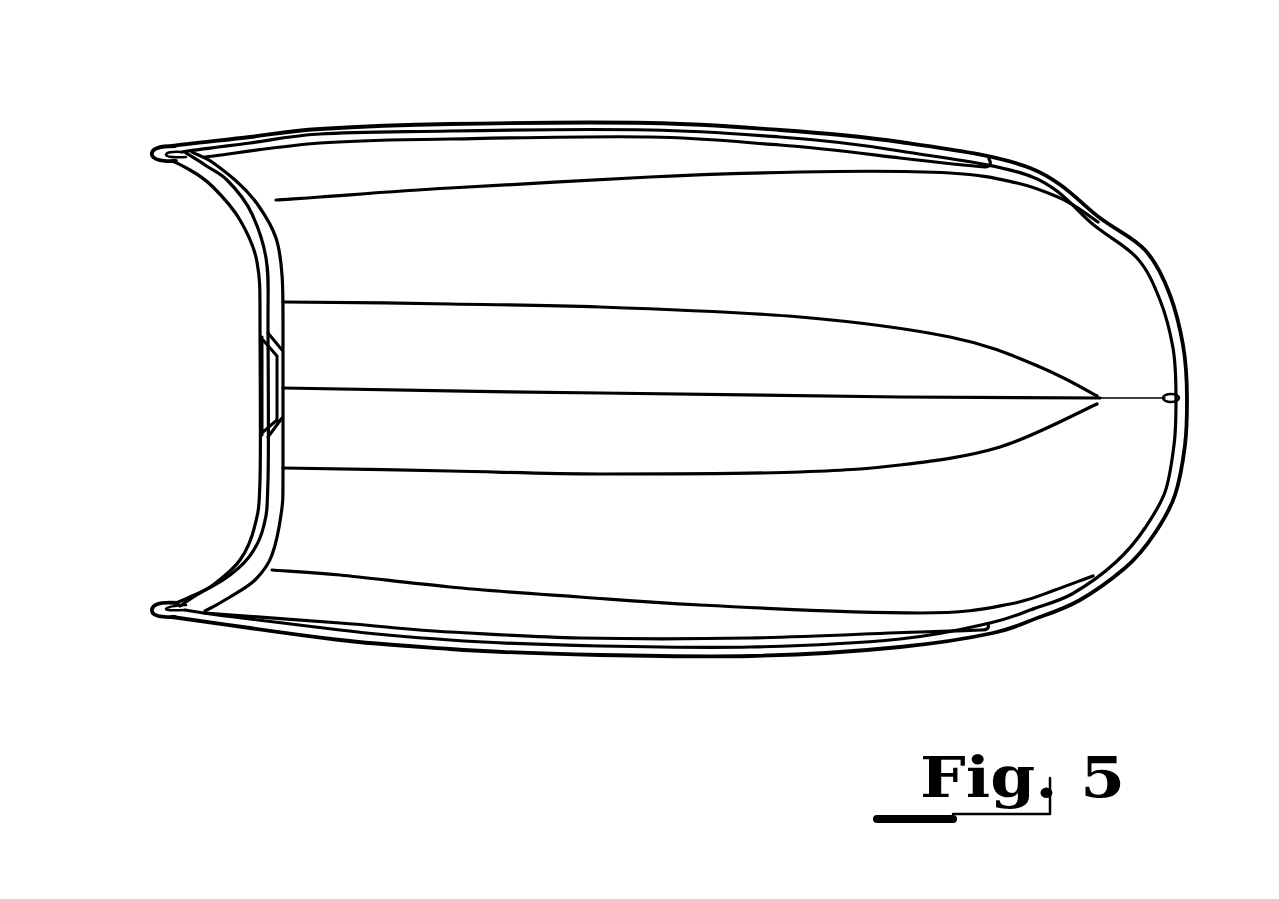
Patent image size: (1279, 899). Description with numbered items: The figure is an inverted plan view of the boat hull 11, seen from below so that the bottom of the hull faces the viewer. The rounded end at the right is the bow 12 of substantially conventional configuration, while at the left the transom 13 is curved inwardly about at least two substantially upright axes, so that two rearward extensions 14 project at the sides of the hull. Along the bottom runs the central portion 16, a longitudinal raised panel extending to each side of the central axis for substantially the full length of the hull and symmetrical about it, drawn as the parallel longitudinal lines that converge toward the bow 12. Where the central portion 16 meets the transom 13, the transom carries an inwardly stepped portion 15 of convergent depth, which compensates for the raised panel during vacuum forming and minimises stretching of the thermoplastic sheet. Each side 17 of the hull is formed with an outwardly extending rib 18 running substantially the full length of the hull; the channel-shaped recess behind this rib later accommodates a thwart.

The boat hull 11 is at (745, 115).
The rounded closed end 12 is at (1115, 313).
The transom 13 is at (228, 272).
The rearward extensions 14 is at (180, 146).
The inwardly stepped portion 15 is at (278, 312).
The central portion 16 is at (682, 362).
The side 17 is at (600, 165).
The rib 18 is at (533, 133).